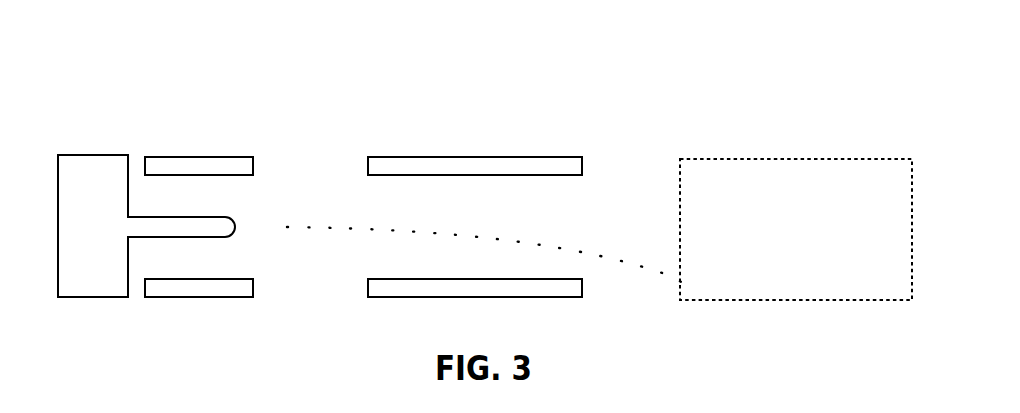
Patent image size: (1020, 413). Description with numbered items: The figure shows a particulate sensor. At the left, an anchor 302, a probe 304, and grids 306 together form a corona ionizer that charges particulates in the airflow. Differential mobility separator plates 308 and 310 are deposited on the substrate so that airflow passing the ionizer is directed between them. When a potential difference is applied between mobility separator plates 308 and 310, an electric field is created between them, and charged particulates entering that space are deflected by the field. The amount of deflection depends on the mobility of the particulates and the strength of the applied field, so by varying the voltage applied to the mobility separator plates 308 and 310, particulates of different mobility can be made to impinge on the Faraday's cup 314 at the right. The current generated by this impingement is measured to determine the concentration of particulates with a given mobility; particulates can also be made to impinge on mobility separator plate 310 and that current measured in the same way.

The anchor 302 is at (110, 173).
The probe 304 is at (217, 227).
The grids 306 is at (235, 288).
The differential mobility separator plate 308 is at (543, 167).
The differential mobility separator plate 310 is at (555, 290).
The Faraday's cup 314 is at (698, 158).